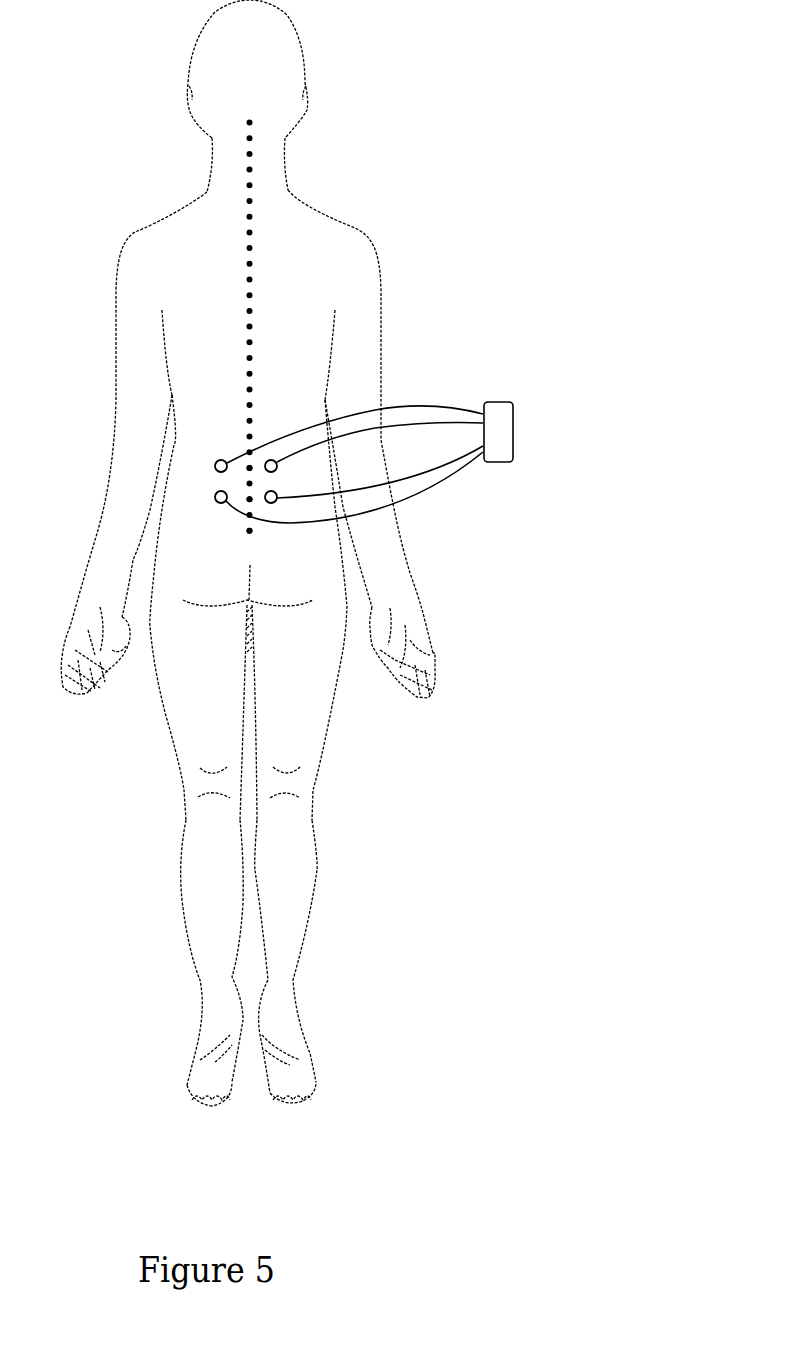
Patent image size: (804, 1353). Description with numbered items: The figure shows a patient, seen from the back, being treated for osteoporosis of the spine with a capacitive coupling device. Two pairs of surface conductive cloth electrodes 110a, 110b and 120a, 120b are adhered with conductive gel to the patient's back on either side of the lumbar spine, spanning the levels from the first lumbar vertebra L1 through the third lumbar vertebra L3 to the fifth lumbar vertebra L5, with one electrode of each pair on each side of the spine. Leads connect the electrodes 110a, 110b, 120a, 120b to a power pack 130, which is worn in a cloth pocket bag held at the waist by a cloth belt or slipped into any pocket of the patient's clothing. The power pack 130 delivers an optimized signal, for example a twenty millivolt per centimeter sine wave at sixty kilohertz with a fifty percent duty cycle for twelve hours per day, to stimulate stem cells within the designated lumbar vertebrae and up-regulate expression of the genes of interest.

The surface conductive cloth electrode 110a is at (221, 459).
The surface conductive cloth electrode 110b is at (267, 459).
The surface conductive cloth electrode 120a is at (227, 495).
The surface conductive cloth electrode 120b is at (271, 497).
The power pack 130 is at (532, 410).
The L1 lumbar vertebra level L1 is at (247, 469).
The L3 lumbar vertebra level L3 is at (247, 502).
The L5 lumbar vertebra level L5 is at (248, 533).